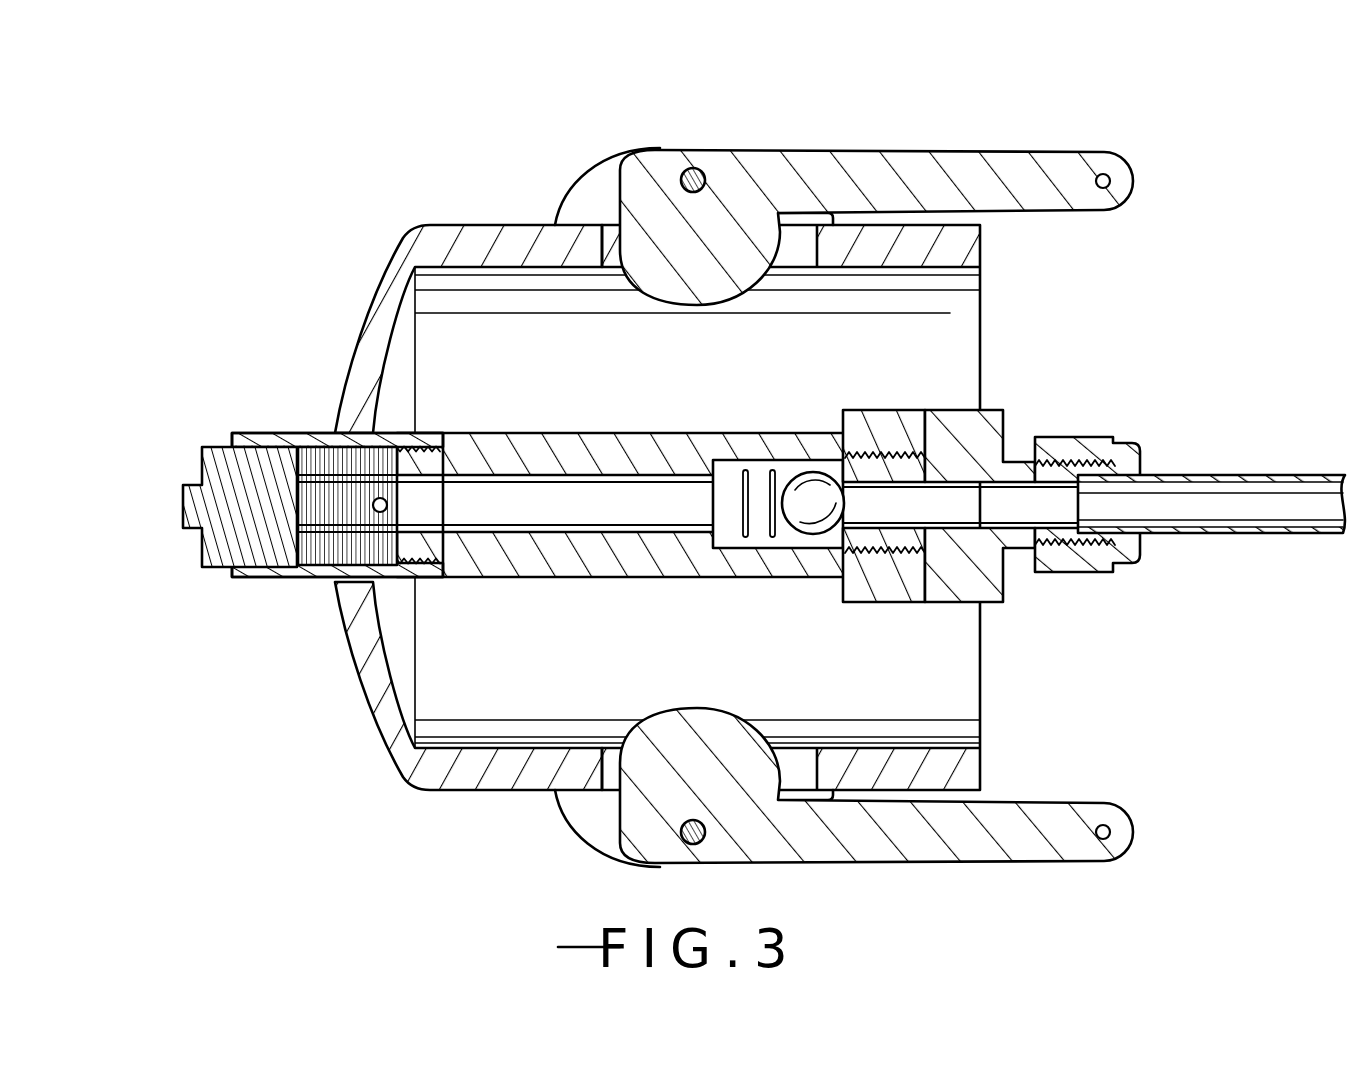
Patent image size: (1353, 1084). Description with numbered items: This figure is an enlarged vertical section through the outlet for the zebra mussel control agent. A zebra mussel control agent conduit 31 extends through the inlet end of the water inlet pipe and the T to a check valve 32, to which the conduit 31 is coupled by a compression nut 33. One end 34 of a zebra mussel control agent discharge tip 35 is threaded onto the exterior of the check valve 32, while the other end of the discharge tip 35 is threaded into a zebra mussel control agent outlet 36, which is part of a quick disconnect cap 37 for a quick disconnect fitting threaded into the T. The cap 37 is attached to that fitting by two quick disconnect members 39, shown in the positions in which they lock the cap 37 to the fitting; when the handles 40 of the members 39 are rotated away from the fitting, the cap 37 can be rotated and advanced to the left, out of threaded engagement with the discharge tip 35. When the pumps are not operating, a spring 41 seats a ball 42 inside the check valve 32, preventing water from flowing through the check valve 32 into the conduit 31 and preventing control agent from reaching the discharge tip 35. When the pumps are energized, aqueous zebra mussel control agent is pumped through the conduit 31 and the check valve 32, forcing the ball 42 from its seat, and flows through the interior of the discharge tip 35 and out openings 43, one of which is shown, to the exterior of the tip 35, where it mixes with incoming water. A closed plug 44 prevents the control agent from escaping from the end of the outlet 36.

The zebra mussel control agent conduit 31 is at (1212, 472).
The check valve 32 is at (942, 408).
The compression nut 33 is at (1085, 437).
The end of discharge tip 34 is at (927, 573).
The zebra mussel control agent discharge tip 35 is at (687, 432).
The zebra mussel control agent outlet 36 is at (267, 432).
The quick disconnect cap 37 is at (423, 223).
The quick disconnect members 39 is at (873, 153).
The handles 40 is at (1127, 158).
The spring 41 is at (737, 550).
The ball 42 is at (815, 472).
The openings 43 is at (375, 510).
The closed plug 44 is at (200, 450).